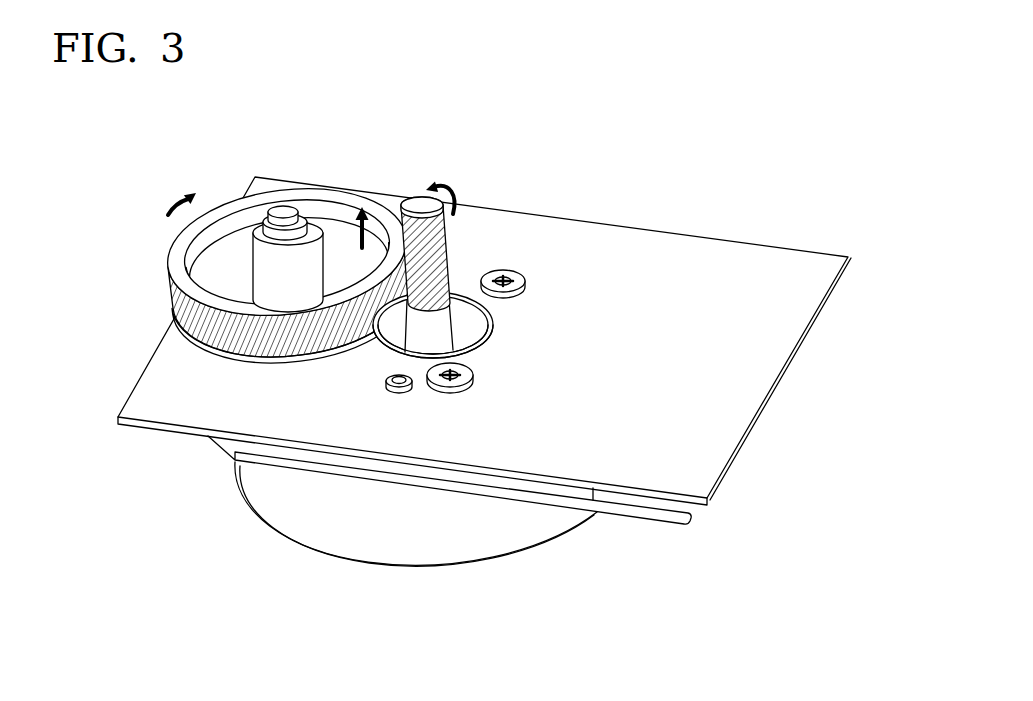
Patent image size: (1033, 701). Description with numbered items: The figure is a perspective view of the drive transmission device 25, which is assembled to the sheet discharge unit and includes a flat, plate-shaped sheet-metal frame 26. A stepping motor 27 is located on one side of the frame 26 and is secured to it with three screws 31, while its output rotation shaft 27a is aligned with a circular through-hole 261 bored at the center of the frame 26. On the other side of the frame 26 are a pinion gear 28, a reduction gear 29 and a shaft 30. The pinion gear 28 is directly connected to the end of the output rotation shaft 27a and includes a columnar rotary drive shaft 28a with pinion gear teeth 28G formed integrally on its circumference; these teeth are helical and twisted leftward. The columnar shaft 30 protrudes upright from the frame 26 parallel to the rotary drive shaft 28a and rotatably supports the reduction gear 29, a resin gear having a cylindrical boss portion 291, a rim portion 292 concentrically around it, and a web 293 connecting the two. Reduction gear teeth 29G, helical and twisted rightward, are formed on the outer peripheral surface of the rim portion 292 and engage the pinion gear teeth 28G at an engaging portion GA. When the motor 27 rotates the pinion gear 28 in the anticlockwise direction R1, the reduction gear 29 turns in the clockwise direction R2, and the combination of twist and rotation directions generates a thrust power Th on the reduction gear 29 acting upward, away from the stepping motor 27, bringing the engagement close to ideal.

The drive transmission device 25 is at (643, 170).
The frame 26 is at (737, 266).
The stepping motor 27 is at (417, 538).
The output rotation shaft 27a is at (445, 332).
The pinion gear 28 is at (475, 212).
The rotary drive shaft 28a is at (420, 205).
The pinion gear teeth 28G is at (438, 264).
The reduction gear 29 is at (251, 267).
The boss portion 291 is at (322, 266).
The rim portion 292 is at (153, 268).
The web 293 is at (293, 303).
The reduction gear teeth 29G is at (296, 327).
The shaft 30 is at (287, 208).
The screws 31 is at (527, 276).
The through-hole 261 is at (483, 314).
The engaging portion GA is at (373, 348).
The thrust power Th is at (368, 212).
The anticlockwise direction R1 is at (453, 210).
The clockwise direction R2 is at (170, 212).